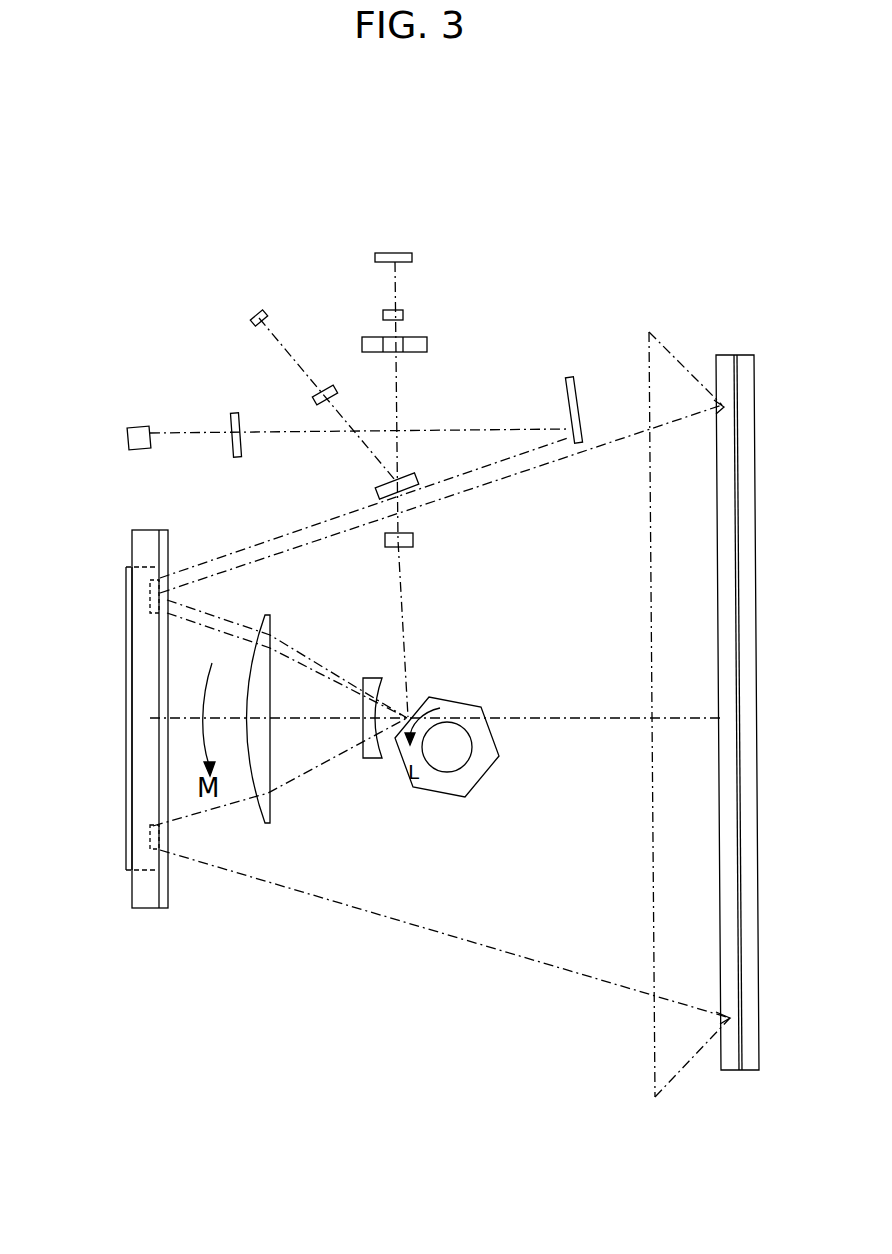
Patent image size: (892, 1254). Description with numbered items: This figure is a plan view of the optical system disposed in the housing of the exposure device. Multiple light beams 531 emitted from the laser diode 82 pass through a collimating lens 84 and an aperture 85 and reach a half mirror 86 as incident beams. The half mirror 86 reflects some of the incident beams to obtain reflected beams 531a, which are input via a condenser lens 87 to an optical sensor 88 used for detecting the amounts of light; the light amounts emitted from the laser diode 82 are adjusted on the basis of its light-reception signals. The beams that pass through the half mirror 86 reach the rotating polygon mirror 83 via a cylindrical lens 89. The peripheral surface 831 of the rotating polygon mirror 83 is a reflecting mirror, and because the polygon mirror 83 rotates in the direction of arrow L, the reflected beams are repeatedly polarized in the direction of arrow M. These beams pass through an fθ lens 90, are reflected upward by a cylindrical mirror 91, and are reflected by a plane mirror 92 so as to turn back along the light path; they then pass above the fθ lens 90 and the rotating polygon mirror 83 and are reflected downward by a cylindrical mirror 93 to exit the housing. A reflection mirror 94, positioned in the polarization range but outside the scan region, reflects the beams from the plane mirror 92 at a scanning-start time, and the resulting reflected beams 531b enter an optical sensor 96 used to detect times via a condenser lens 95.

The laser diode 82 is at (405, 253).
The light beams 531 is at (395, 285).
The collimating lens 84 is at (400, 310).
The aperture 85 is at (420, 337).
The optical sensor 88 is at (262, 310).
The condenser lens 87 is at (330, 388).
The half mirror 86 is at (404, 478).
The reflected beams 531a is at (370, 453).
The reflected beams 531b is at (558, 415).
The reflection mirror 94 is at (577, 388).
The cylindrical mirror 93 is at (725, 362).
The optical sensor 96 is at (136, 431).
The condenser lens 95 is at (229, 422).
The cylindrical lens 89 is at (413, 540).
The rotating polygon mirror 83 is at (477, 735).
The peripheral surface 831 is at (483, 777).
The fθ lens 90 is at (373, 760).
The plane mirror 92 is at (143, 792).
The cylindrical mirror 91 is at (148, 888).